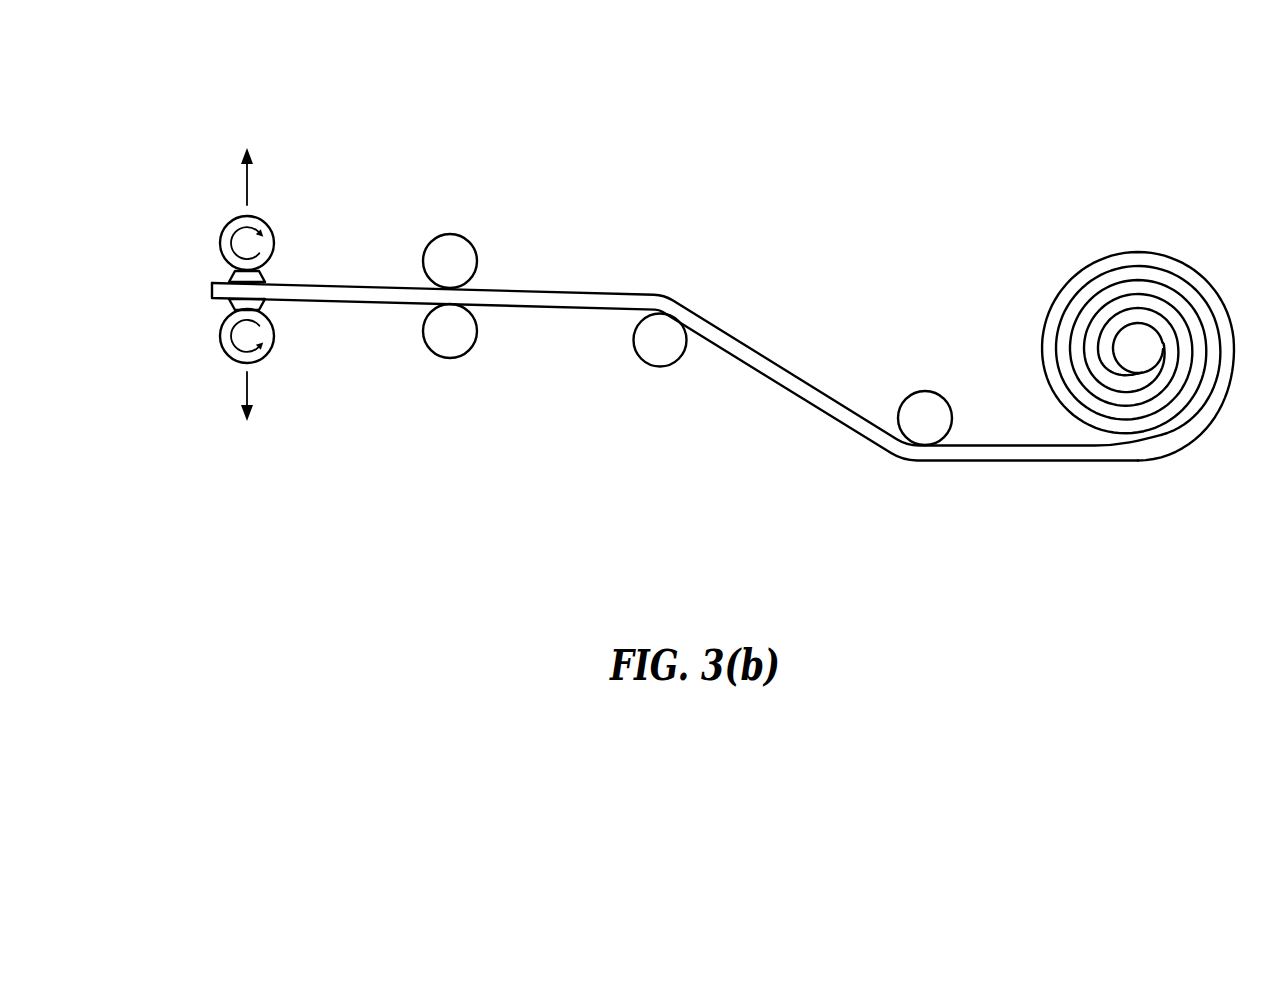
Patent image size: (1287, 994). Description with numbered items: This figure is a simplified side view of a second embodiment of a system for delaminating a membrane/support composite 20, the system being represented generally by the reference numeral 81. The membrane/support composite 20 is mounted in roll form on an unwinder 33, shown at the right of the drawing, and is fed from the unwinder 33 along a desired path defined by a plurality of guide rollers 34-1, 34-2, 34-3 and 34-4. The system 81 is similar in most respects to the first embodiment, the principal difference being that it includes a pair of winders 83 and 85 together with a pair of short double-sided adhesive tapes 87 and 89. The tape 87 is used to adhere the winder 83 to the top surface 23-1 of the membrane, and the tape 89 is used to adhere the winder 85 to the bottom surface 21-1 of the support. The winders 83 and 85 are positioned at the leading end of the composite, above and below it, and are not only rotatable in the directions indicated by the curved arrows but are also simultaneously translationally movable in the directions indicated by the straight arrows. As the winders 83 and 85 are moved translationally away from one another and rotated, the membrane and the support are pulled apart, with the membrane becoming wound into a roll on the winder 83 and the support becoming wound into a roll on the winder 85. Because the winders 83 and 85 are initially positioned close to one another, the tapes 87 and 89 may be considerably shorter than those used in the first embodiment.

The delaminating system 81 is at (678, 148).
The winder 83 is at (231, 230).
The winder 85 is at (228, 333).
The double-sided adhesive tape 87 is at (266, 274).
The double-sided adhesive tape 89 is at (263, 307).
The top surface of membrane 23-1 is at (566, 292).
The bottom surface of support 21-1 is at (592, 309).
The guide roller 34-1 is at (930, 410).
The guide roller 34-2 is at (663, 348).
The guide roller 34-3 is at (459, 252).
The guide roller 34-4 is at (452, 340).
The membrane/support composite 20 is at (1185, 273).
The unwinder 33 is at (1135, 347).